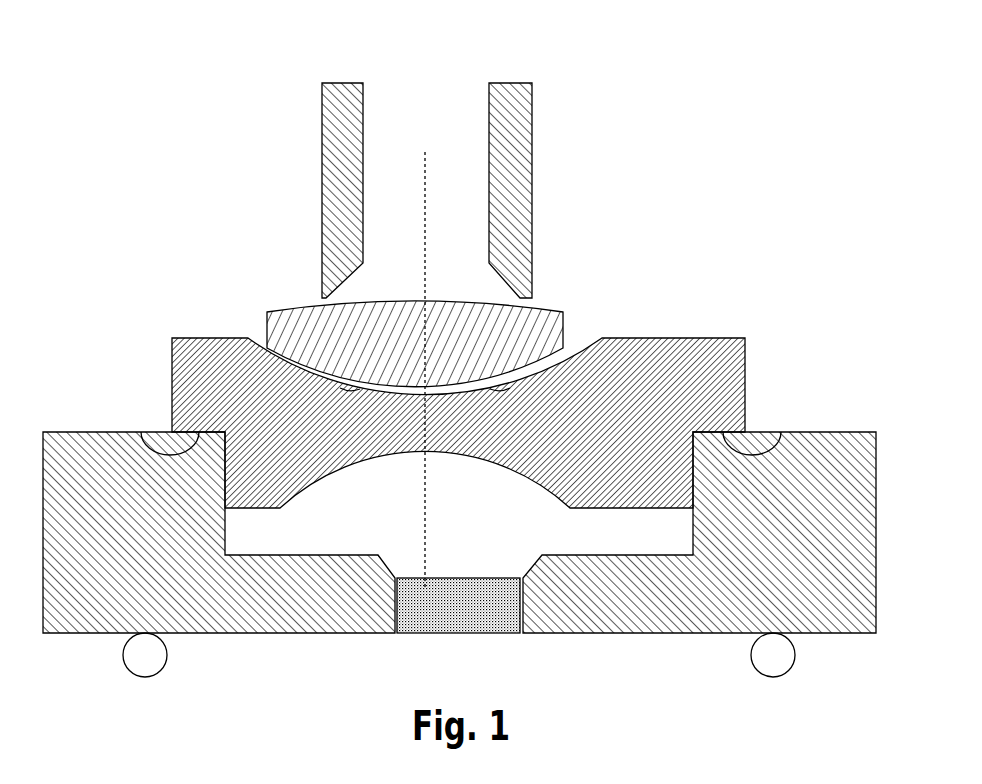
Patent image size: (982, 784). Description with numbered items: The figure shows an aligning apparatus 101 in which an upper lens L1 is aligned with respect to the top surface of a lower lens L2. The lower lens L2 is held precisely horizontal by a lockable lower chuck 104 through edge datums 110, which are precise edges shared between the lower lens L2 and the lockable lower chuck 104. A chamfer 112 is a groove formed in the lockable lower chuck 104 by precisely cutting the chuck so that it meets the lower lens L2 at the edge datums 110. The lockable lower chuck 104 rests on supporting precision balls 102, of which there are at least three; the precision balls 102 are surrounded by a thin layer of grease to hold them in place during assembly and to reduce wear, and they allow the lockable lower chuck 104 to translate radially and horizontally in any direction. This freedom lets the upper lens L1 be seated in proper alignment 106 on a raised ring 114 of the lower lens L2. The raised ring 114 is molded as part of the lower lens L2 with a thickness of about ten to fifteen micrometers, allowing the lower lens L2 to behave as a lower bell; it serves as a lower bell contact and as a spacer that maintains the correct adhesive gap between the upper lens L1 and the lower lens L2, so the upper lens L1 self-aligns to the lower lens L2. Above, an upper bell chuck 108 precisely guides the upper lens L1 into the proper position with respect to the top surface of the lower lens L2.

The aligning apparatus 101 is at (616, 100).
The supporting precision balls 102 is at (145, 655).
The lockable lower chuck 104 is at (72, 442).
The proper alignment 106 is at (424, 157).
The upper bell chuck 108 is at (507, 85).
The edge datums 110 is at (225, 477).
The chamfer 112 is at (538, 562).
The raised ring 114 is at (345, 387).
The upper lens L1 is at (415, 344).
The lower lens L2 is at (458, 423).